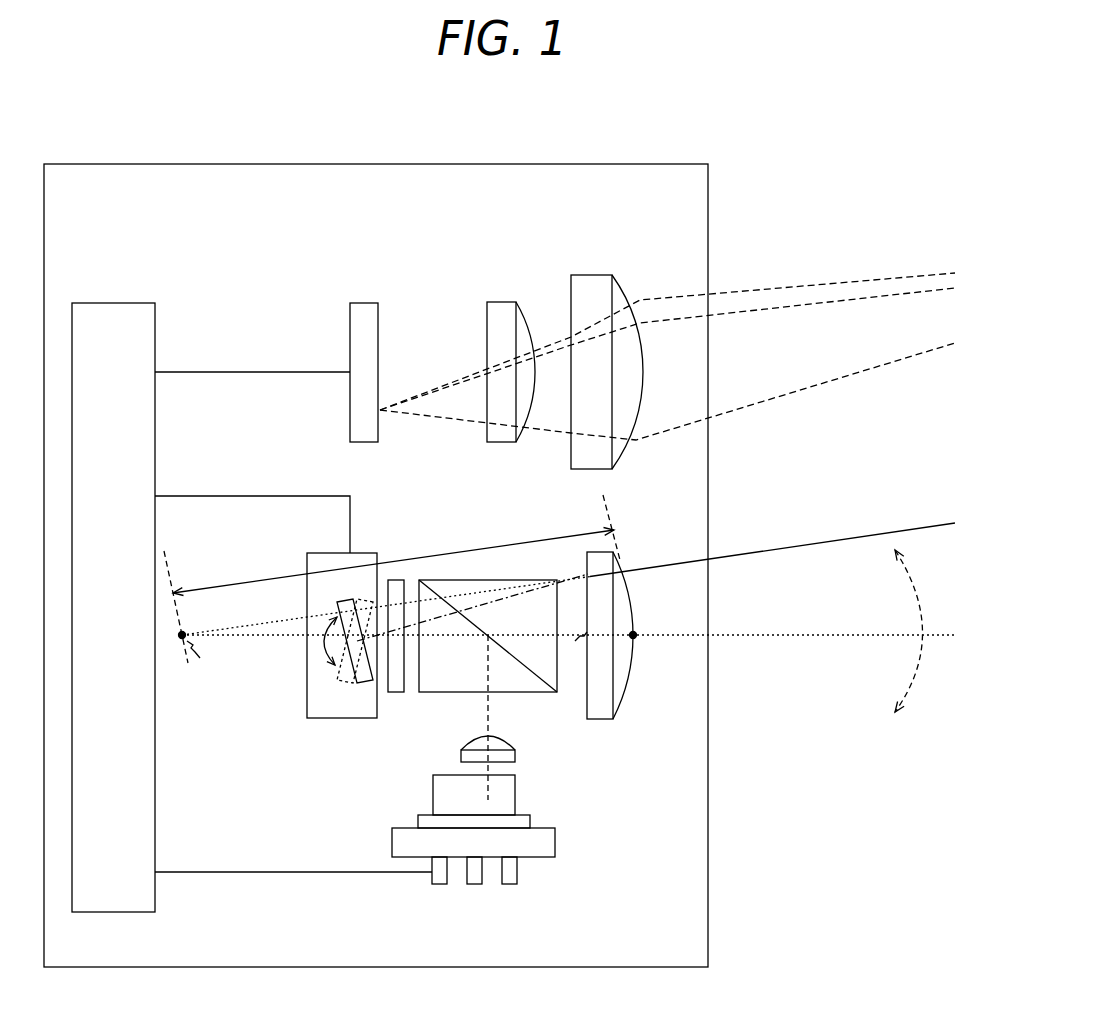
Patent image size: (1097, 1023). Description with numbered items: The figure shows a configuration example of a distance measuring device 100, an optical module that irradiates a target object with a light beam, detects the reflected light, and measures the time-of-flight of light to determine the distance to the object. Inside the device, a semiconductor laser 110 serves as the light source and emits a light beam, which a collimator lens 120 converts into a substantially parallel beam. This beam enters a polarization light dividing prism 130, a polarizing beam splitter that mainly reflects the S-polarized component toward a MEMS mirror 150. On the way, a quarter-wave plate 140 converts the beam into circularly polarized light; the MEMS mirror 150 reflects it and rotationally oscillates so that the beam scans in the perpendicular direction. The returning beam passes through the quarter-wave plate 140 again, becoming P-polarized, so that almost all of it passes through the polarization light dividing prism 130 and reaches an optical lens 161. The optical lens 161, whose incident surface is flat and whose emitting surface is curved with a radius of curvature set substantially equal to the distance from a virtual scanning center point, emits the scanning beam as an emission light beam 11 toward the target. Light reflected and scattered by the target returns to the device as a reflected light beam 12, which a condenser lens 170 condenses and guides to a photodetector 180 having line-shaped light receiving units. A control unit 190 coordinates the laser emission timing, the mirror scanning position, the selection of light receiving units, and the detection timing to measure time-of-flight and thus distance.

The distance measuring device 100 is at (376, 545).
The control unit 190 is at (247, 572).
The photodetector 180 is at (397, 326).
The condenser lens 170 is at (562, 331).
The reflected light beam 12 is at (667, 331).
The emission light beam 11 is at (559, 615).
The optical lens 161 is at (629, 598).
The MEMS mirror 150 is at (406, 675).
The quarter-wave plate 140 is at (385, 687).
The polarization light dividing prism 130 is at (556, 690).
The collimator lens 120 is at (566, 804).
The semiconductor laser 110 is at (383, 829).